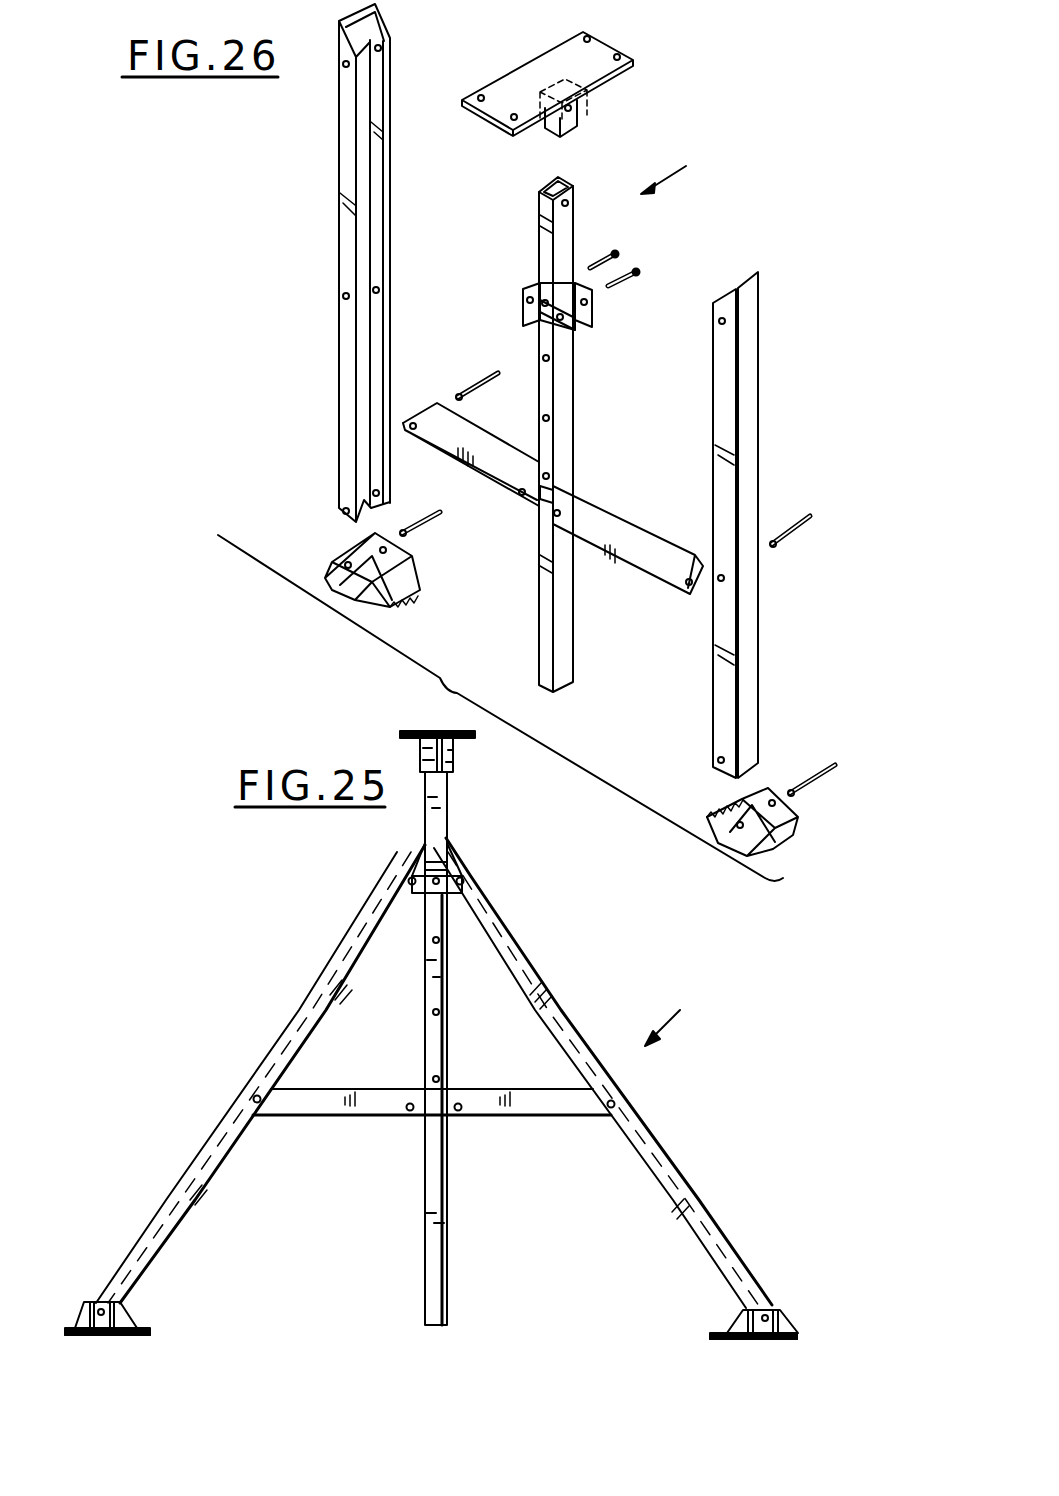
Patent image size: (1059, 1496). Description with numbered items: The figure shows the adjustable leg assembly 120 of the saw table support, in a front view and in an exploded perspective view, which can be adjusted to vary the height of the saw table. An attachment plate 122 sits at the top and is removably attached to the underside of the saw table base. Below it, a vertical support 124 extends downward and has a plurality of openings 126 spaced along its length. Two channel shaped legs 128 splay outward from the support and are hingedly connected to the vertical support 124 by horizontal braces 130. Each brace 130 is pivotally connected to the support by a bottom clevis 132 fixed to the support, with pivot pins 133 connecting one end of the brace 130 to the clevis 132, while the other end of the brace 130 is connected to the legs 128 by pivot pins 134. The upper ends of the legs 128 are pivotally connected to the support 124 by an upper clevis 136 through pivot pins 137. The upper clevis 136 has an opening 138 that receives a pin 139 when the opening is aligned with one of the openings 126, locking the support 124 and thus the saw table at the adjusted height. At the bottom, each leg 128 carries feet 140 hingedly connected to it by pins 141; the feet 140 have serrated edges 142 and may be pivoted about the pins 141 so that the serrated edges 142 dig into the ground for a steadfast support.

In FIG. 26, the leg assembly 120 is at (690, 176).
In FIG. 25, the leg assembly 120 is at (679, 1013).
In FIG. 26, the attachment plate 122 is at (598, 52).
In FIG. 25, the attachment plate 122 is at (428, 730).
In FIG. 25, the vertical support 124 is at (437, 1193).
In FIG. 25, the openings 126 is at (437, 943).
In FIG. 26, the channel shaped legs 128 is at (345, 372).
In FIG. 25, the channel shaped legs 128 is at (278, 1058).
In FIG. 26, the horizontal braces 130 is at (494, 476).
In FIG. 25, the horizontal braces 130 is at (317, 1107).
In FIG. 26, the bottom clevis 132 is at (553, 488).
In FIG. 25, the bottom clevis 132 is at (437, 1117).
In FIG. 25, the pivot pins 133 is at (460, 1112).
In FIG. 26, the pivot pins 134 is at (476, 392).
In FIG. 25, the pivot pins 134 is at (252, 1098).
In FIG. 26, the upper clevis 136 is at (533, 316).
In FIG. 25, the upper clevis 136 is at (447, 894).
In FIG. 26, the pivot pins 137 is at (606, 270).
In FIG. 25, the pivot pins 137 is at (410, 882).
In FIG. 26, the opening 138 is at (545, 292).
In FIG. 25, the opening 138 is at (433, 897).
In FIG. 26, the pin 139 is at (537, 308).
In FIG. 25, the pin 139 is at (434, 866).
In FIG. 26, the feet 140 is at (396, 580).
In FIG. 25, the feet 140 is at (78, 1318).
In FIG. 26, the pins 141 is at (434, 513).
In FIG. 25, the pins 141 is at (118, 1302).
In FIG. 26, the serrated edges 142 is at (733, 801).
In FIG. 25, the serrated edges 142 is at (150, 1329).